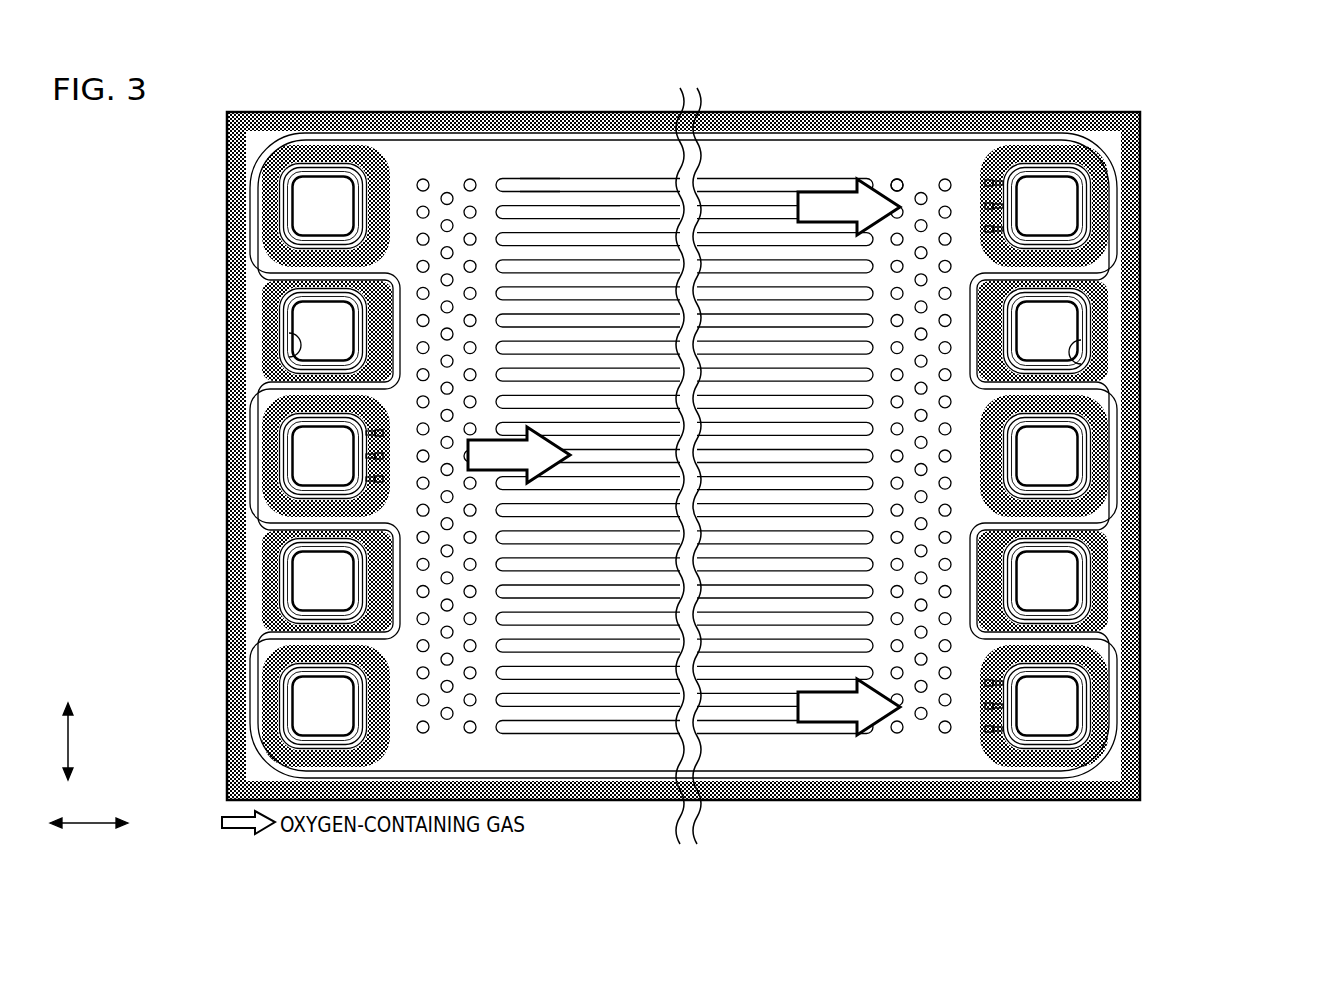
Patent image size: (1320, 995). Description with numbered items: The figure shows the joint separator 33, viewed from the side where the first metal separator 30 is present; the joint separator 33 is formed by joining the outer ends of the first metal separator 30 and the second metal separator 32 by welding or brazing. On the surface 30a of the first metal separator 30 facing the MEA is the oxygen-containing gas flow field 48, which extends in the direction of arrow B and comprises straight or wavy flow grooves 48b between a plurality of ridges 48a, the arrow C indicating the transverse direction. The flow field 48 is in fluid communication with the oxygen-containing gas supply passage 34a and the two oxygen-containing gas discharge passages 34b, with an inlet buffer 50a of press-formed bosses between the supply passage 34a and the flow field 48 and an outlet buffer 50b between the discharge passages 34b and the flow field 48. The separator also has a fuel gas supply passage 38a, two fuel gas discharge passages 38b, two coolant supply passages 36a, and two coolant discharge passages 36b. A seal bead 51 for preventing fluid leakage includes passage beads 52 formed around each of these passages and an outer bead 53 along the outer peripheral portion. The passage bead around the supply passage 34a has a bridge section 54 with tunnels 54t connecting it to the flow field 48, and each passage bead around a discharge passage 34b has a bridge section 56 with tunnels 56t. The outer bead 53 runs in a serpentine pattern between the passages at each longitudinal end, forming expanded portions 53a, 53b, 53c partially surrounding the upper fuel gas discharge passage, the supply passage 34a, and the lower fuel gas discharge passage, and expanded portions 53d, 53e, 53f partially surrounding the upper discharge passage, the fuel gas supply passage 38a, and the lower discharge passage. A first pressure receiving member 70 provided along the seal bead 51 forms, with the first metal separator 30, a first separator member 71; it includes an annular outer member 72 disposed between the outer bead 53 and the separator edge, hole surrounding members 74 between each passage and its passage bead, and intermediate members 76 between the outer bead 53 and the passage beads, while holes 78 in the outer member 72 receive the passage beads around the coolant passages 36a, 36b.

The first metal separator 30 is at (780, 105).
The surface of first metal separator 30a is at (745, 160).
The second metal separator 32 is at (941, 105).
The joint separator 33 is at (898, 96).
The oxygen-containing gas supply passage 34a is at (305, 466).
The oxygen-containing gas discharge passage 34b is at (1060, 207).
The coolant supply passage 36a is at (1060, 333).
The coolant discharge passage 36b is at (305, 330).
The fuel gas supply passage 38a is at (1065, 458).
The fuel gas discharge passage 38b is at (305, 205).
The oxygen-containing gas flow field 48 is at (636, 96).
The ridges 48a is at (538, 210).
The flow grooves 48b is at (593, 196).
The inlet buffer 50a is at (468, 179).
The outlet buffer 50b is at (895, 179).
The seal bead 51 is at (857, 788).
The passage beads 52 is at (300, 176).
The outer bead 53 is at (1107, 772).
The expanded portion 53a is at (262, 148).
The expanded portion 53b is at (265, 388).
The expanded portion 53c is at (265, 642).
The expanded portion 53d is at (1102, 263).
The expanded portion 53e is at (1100, 392).
The expanded portion 53f is at (1115, 718).
The bridge section 54 is at (388, 441).
The tunnels 54t is at (377, 456).
The bridge section 56 is at (976, 184).
The tunnels 56t is at (1003, 178).
The first pressure receiving member 70 is at (1122, 126).
The first separator member 71 is at (472, 111).
The outer member 72 is at (1088, 124).
The hole surrounding members 74 is at (357, 180).
The intermediate members 76 is at (330, 150).
The holes 78 is at (297, 346).
The arrow C is at (61, 741).
The arrow B is at (89, 811).